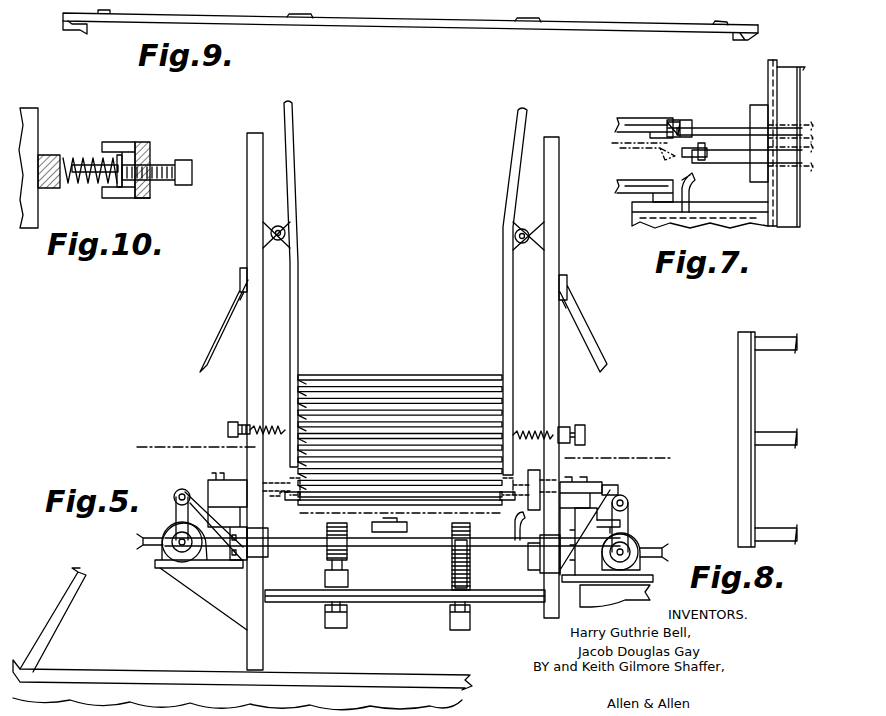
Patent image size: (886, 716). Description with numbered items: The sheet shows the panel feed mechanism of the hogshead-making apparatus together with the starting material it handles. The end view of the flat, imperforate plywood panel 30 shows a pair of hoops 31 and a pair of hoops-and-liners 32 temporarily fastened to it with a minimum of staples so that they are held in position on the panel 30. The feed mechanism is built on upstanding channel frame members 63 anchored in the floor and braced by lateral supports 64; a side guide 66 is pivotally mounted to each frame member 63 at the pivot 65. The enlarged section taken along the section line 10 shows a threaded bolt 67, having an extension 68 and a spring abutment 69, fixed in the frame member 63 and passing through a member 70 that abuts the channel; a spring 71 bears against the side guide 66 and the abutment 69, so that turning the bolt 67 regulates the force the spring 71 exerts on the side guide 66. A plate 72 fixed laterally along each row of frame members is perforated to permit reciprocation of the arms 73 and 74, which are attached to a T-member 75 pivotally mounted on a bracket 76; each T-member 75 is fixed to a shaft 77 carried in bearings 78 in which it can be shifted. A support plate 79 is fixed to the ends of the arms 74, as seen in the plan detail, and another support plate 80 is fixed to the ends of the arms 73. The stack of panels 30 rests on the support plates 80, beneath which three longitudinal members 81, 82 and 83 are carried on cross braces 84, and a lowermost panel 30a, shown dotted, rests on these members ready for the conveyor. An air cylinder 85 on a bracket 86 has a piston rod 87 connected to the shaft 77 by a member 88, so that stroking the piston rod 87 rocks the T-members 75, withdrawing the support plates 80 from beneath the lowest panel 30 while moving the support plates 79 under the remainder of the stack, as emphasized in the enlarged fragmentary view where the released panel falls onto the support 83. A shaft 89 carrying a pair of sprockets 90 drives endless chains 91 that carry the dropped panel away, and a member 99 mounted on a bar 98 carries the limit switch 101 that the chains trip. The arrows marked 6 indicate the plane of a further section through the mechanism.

In FIG. 9, the panel 30 is at (420, 29).
In FIG. 10, the panel 30 is at (36, 110).
In FIG. 7, the panel 30 is at (626, 118).
In FIG. 5, the panel 30 is at (412, 385).
In FIG. 5, the panel 30a is at (370, 540).
In FIG. 9, the hoops 31 is at (283, 14).
In FIG. 9, the hoops-and-liners 32 is at (760, 24).
In FIG. 7, the upstanding frame members 63 is at (768, 70).
In FIG. 5, the upstanding frame members 63 is at (248, 376).
In FIG. 5, the lateral supports 64 is at (225, 322).
In FIG. 10, the pivot 65 is at (106, 142).
In FIG. 5, the pivot 65 is at (278, 226).
In FIG. 10, the side guide 66 is at (50, 155).
In FIG. 5, the side guide 66 is at (298, 265).
In FIG. 10, the threaded bolt 67 is at (163, 165).
In FIG. 5, the threaded bolt 67 is at (232, 422).
In FIG. 10, the extension 68 is at (87, 188).
In FIG. 10, the spring abutment 69 is at (140, 142).
In FIG. 10, the member 70 is at (150, 195).
In FIG. 10, the spring 71 is at (72, 174).
In FIG. 5, the spring 71 is at (283, 427).
In FIG. 7, the plate 72 is at (755, 108).
In FIG. 5, the plate 72 is at (534, 470).
In FIG. 7, the arms 73 is at (729, 163).
In FIG. 5, the arms 73 is at (528, 505).
In FIG. 7, the arms 74 is at (718, 128).
In FIG. 8, the arms 74 is at (782, 340).
In FIG. 5, the arms 74 is at (570, 486).
In FIG. 5, the T-member 75 is at (605, 494).
In FIG. 5, the bracket 76 is at (618, 500).
In FIG. 5, the shaft 77 is at (629, 503).
In FIG. 5, the bearings 78 is at (585, 536).
In FIG. 7, the support plate 79 is at (682, 120).
In FIG. 8, the support plate 79 is at (742, 468).
In FIG. 5, the support plate 79 is at (290, 480).
In FIG. 7, the support plate 80 is at (685, 157).
In FIG. 5, the support plate 80 is at (305, 502).
In FIG. 5, the longitudinal member 81 is at (310, 545).
In FIG. 5, the longitudinal member 82 is at (395, 518).
In FIG. 7, the longitudinal member 83 is at (691, 184).
In FIG. 5, the longitudinal member 83 is at (516, 545).
In FIG. 7, the cross braces 84 is at (720, 227).
In FIG. 5, the cross braces 84 is at (420, 547).
In FIG. 5, the air cylinder 85 is at (641, 546).
In FIG. 5, the bracket 86 is at (640, 598).
In FIG. 5, the piston rod 87 is at (640, 568).
In FIG. 5, the member 88 is at (629, 525).
In FIG. 5, the shaft 89 is at (305, 562).
In FIG. 5, the sprockets 90 is at (347, 553).
In FIG. 5, the endless chains 91 is at (470, 580).
In FIG. 5, the bar 98 is at (420, 602).
In FIG. 5, the member 99 is at (347, 612).
In FIG. 5, the limit switch 101 is at (348, 580).
In FIG. 5, the section line 6 is at (145, 440).
In FIG. 5, the section line 10 is at (518, 430).